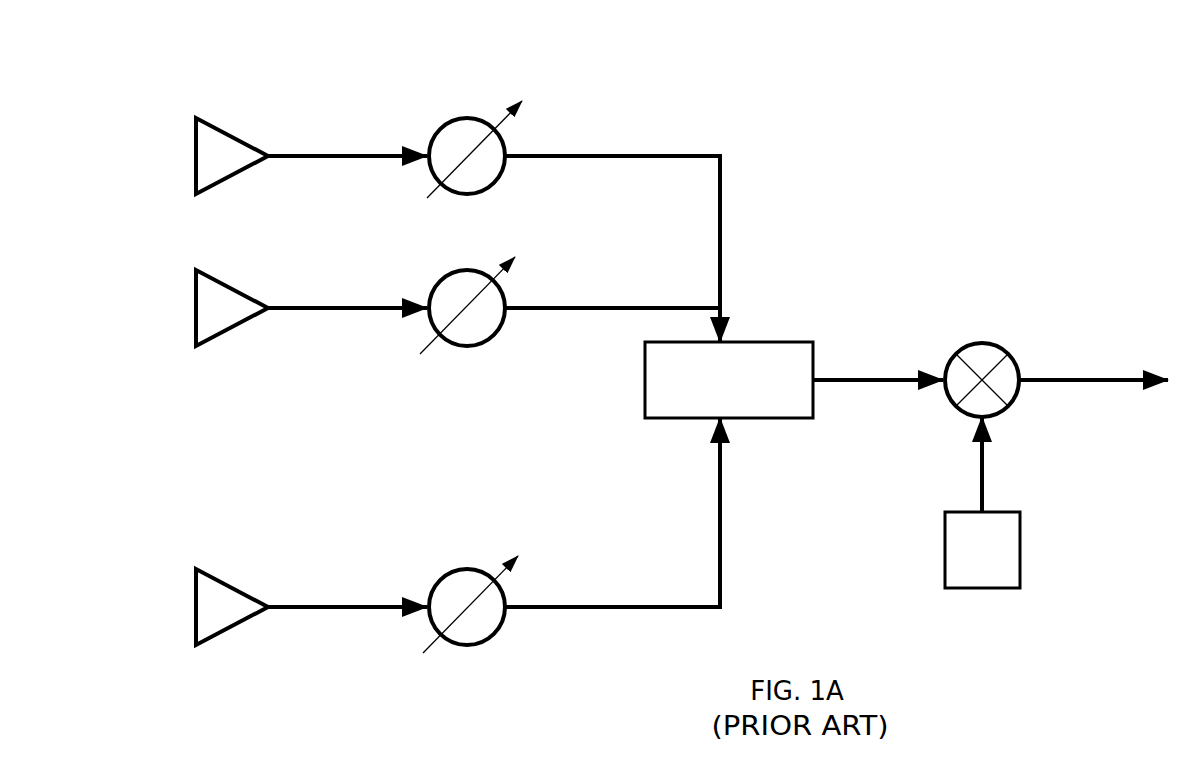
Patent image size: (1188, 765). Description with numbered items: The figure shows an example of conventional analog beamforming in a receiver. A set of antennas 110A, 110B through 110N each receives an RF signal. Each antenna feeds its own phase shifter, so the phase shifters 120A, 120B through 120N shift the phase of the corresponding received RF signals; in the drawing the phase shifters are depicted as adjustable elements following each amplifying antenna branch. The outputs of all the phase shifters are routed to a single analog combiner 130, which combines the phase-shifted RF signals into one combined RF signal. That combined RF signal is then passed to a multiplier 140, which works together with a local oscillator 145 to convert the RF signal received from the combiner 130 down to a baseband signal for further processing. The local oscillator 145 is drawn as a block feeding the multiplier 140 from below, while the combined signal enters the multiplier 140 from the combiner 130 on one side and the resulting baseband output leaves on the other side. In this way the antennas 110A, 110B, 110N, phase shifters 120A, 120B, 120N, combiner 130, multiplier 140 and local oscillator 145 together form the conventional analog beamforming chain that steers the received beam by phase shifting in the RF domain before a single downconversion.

The antenna 110A is at (192, 157).
The antenna 110B is at (192, 308).
The antenna 110N is at (192, 607).
The phase shifter 120A is at (467, 118).
The phase shifter 120B is at (467, 270).
The phase shifter 120N is at (467, 569).
The combiner 130 is at (777, 342).
The multiplier 140 is at (982, 343).
The local oscillator 145 is at (1020, 558).